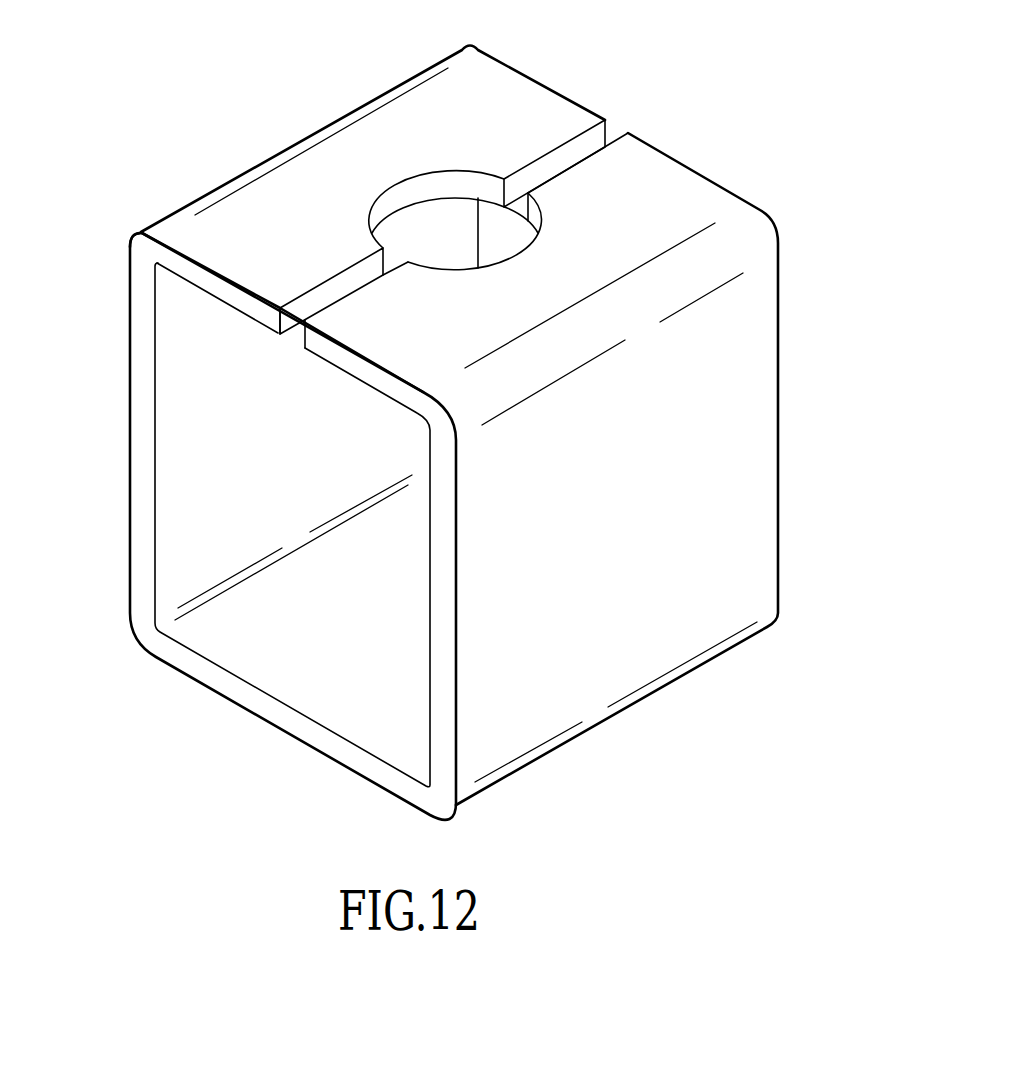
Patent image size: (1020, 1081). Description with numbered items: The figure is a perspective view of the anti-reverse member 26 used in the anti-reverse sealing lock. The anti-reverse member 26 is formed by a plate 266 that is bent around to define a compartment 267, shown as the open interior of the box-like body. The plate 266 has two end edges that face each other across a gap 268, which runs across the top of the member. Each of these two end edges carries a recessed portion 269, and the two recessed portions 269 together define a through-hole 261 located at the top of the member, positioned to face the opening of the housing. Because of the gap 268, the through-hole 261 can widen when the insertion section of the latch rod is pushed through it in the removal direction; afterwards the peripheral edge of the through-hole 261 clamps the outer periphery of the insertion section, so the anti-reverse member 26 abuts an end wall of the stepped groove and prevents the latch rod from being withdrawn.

The anti-reverse member 26 is at (743, 68).
The through-hole 261 is at (433, 237).
The plate 266 is at (458, 130).
The compartment 267 is at (217, 483).
The gap 268 is at (558, 160).
The recessed portion 269 is at (507, 250).